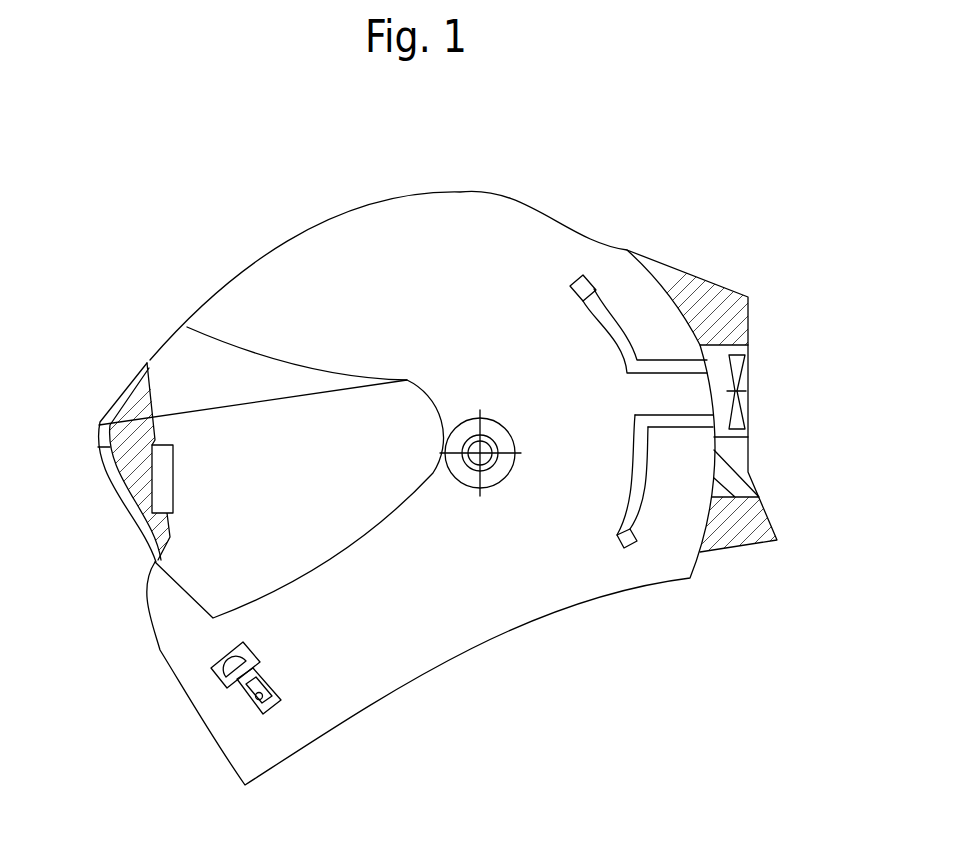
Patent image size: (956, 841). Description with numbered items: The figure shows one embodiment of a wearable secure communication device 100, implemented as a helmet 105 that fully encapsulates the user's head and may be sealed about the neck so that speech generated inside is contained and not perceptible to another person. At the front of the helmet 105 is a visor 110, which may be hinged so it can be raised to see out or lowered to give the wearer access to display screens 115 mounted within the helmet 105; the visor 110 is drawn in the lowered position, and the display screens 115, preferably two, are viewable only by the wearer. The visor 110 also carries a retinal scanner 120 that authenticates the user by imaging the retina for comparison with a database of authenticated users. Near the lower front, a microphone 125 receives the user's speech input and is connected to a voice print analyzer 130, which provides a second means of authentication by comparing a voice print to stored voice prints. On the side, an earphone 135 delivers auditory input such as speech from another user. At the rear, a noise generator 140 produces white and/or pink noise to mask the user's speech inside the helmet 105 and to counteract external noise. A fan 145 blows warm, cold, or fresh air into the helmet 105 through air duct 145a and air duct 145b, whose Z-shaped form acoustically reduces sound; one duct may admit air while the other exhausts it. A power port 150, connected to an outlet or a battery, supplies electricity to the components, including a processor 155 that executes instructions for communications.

The wearable secure communication device 100 is at (93, 171).
The helmet 105 is at (320, 275).
The visor 110 is at (146, 361).
The display screens 115 is at (143, 437).
The retinal scanner 120 is at (138, 503).
The microphone 125 is at (217, 668).
The voice print analyzer 130 is at (245, 706).
The earphone 135 is at (497, 477).
The noise generator 140 is at (730, 300).
The fan 145 is at (750, 383).
The air duct 145a is at (590, 280).
The air duct 145b is at (634, 542).
The power port 150 is at (740, 463).
The processor 155 is at (763, 517).